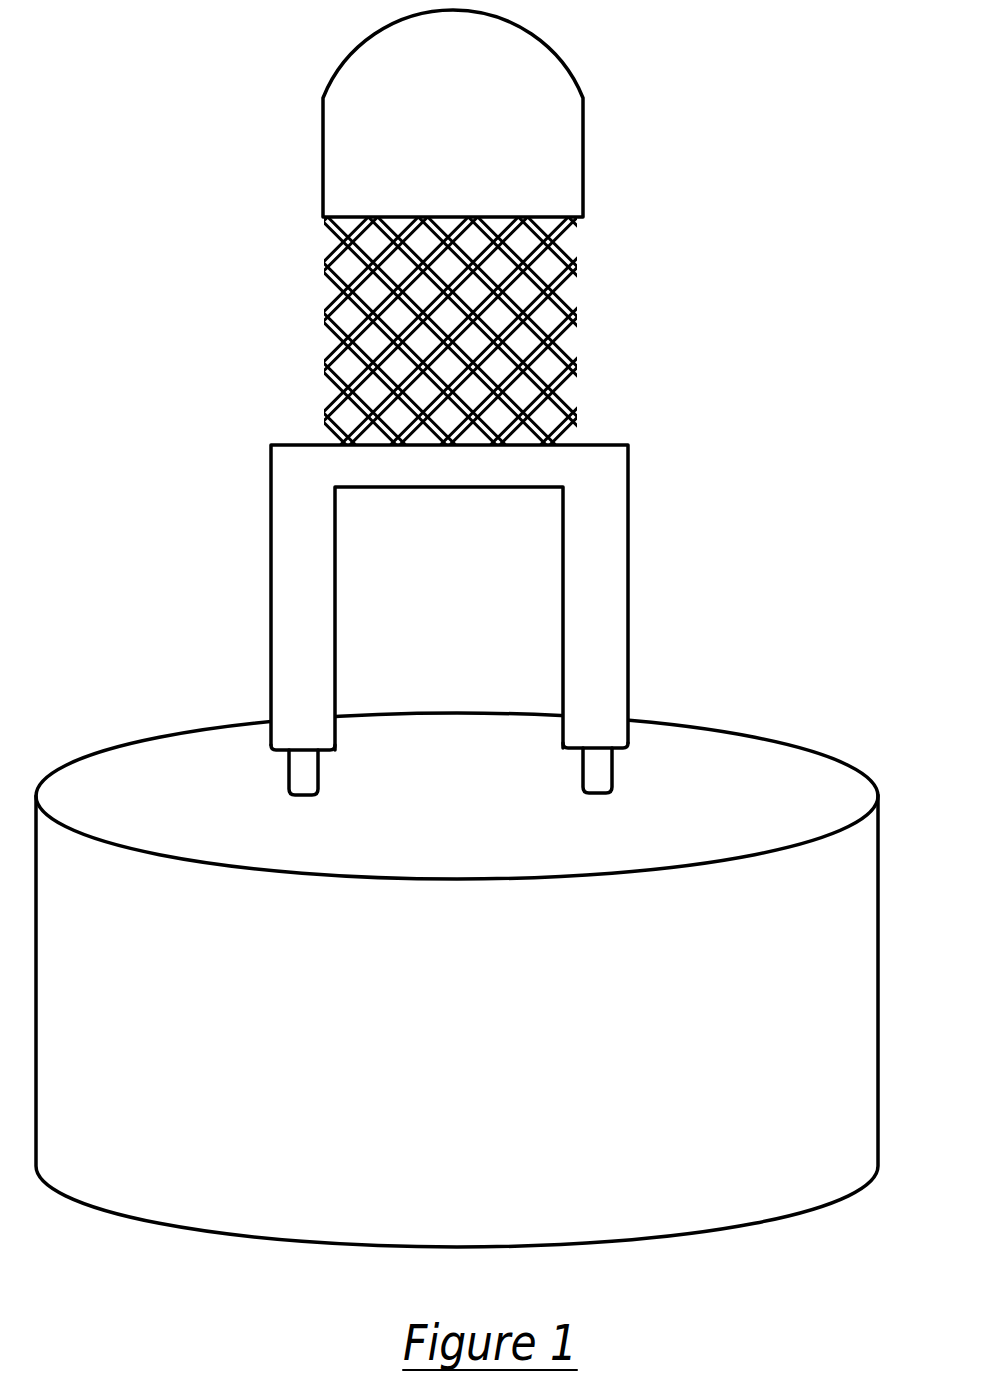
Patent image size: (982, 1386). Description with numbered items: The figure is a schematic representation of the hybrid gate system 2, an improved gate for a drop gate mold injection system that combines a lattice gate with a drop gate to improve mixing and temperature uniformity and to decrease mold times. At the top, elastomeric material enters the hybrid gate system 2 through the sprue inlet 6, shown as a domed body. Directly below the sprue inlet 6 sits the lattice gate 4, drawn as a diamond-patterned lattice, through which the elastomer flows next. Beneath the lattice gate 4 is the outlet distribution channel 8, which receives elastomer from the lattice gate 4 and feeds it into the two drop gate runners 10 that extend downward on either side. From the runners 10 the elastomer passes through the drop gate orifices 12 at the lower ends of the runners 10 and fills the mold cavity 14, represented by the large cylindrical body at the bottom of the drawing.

The hybrid gate system 2 is at (457, 628).
The lattice gate 4 is at (567, 338).
The sprue inlet 6 is at (565, 140).
The outlet distribution channel 8 is at (458, 620).
The drop gate runners 10 is at (280, 543).
The drop gate orifices 12 is at (296, 776).
The mold cavity 14 is at (526, 1049).